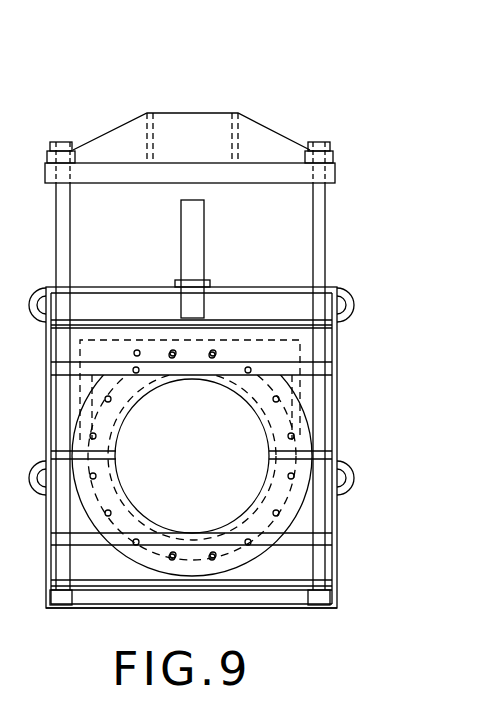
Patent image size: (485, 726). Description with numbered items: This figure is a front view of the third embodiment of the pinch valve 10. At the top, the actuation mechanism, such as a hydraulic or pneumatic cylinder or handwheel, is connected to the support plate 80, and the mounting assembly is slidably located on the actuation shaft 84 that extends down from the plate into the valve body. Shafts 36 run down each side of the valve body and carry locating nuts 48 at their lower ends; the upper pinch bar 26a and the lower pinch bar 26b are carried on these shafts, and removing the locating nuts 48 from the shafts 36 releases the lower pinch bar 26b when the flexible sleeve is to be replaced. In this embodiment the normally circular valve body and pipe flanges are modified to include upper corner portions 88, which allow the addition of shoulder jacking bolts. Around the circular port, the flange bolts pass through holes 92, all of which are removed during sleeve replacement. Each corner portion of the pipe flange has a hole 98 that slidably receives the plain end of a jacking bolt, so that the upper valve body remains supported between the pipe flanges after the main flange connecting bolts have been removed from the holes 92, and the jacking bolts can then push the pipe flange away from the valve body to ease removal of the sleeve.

The gate valve assembly 10 is at (232, 86).
The support plate 80 is at (235, 146).
The shafts 36 is at (58, 236).
The actuation shaft 84 is at (198, 240).
The upper corner portions 88 is at (78, 355).
The hole 98 is at (106, 350).
The upper flange 26a is at (313, 328).
The lower pinch bar 26b is at (310, 580).
The holes 92 is at (292, 478).
The locating nuts 48 is at (327, 610).